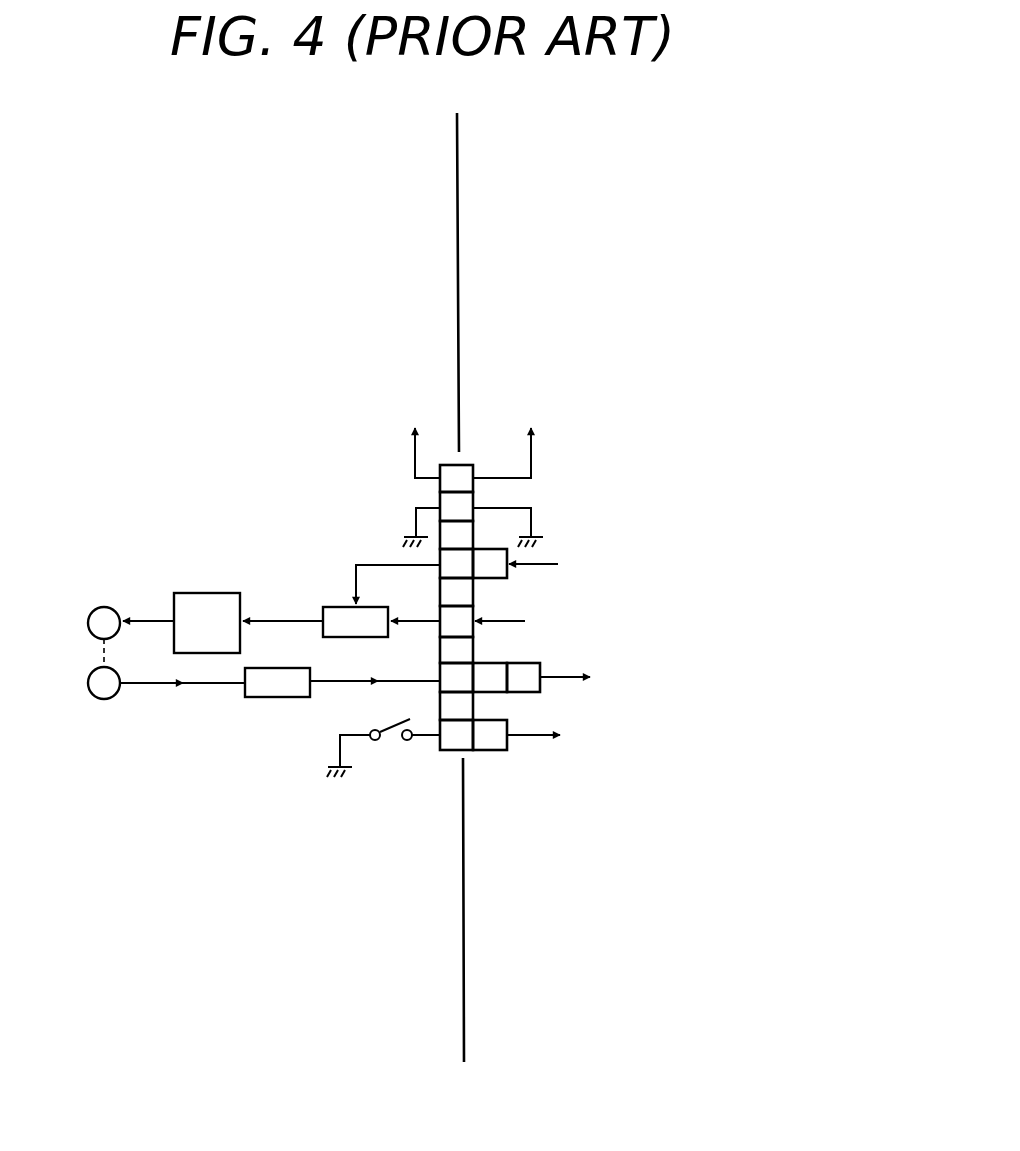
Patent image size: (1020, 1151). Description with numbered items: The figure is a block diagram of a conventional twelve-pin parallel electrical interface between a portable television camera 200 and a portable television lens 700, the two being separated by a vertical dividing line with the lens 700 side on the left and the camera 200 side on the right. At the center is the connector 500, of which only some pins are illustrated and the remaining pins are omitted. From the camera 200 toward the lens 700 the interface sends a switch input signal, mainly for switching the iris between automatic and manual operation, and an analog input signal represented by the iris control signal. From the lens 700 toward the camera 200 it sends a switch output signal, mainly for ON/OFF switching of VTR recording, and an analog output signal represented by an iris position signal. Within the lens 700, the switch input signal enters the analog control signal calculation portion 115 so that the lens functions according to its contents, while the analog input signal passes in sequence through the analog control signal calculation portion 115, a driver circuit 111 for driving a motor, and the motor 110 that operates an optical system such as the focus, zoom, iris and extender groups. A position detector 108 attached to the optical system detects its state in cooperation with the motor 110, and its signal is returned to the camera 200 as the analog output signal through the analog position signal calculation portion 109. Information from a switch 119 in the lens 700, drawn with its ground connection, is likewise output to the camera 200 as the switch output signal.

The 12-pin connector 500 is at (475, 465).
The analog control signal calculation portion 115 is at (375, 637).
The driver circuit 111 is at (227, 593).
The motor 110 is at (112, 607).
The position detector 108 is at (93, 695).
The analog position signal calculation portion 109 is at (253, 697).
The switch 119 is at (388, 748).
The portable television lens 700 is at (227, 930).
The portable television camera 200 is at (622, 930).